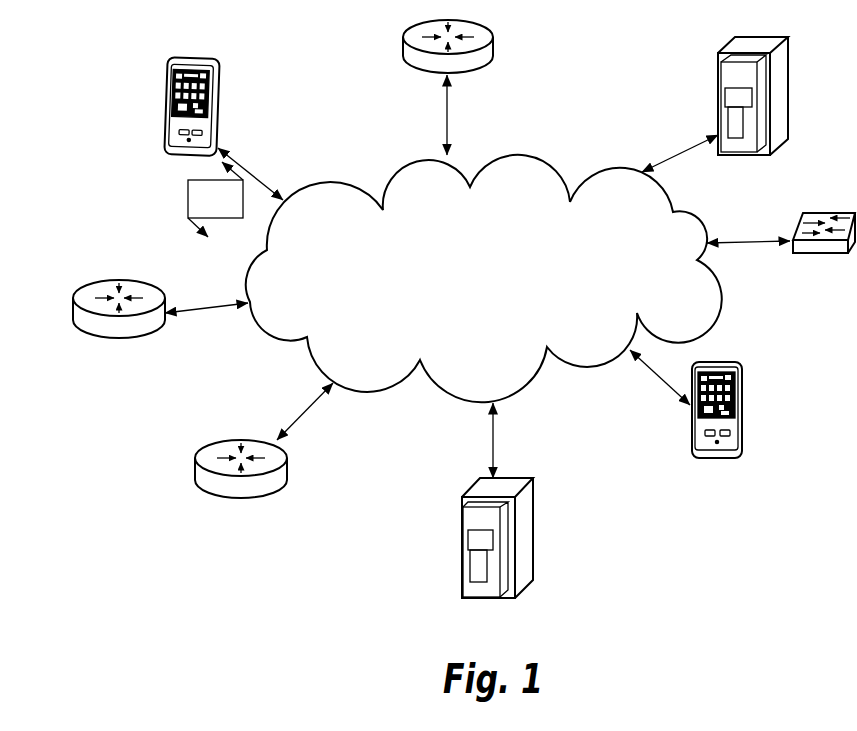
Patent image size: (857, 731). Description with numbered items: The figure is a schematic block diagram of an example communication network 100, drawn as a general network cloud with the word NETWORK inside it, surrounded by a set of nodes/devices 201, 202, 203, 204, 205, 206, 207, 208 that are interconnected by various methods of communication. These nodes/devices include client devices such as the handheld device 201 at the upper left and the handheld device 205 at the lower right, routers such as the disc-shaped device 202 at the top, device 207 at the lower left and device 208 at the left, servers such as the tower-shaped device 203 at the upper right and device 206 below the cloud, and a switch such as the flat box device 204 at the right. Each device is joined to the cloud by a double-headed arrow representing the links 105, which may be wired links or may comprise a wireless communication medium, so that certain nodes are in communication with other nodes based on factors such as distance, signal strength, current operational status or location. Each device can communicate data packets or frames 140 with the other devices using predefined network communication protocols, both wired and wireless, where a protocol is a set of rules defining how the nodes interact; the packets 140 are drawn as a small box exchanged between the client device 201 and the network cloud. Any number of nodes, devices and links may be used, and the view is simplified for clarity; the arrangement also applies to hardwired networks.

The communication network 100 is at (539, 230).
The links 105 is at (250, 178).
The data packets 140 is at (234, 209).
The node/device 201 is at (167, 80).
The node/device 202 is at (497, 48).
The node/device 203 is at (780, 147).
The node/device 204 is at (837, 255).
The node/device 205 is at (743, 430).
The node/device 206 is at (462, 525).
The node/device 207 is at (220, 498).
The node/device 208 is at (73, 313).